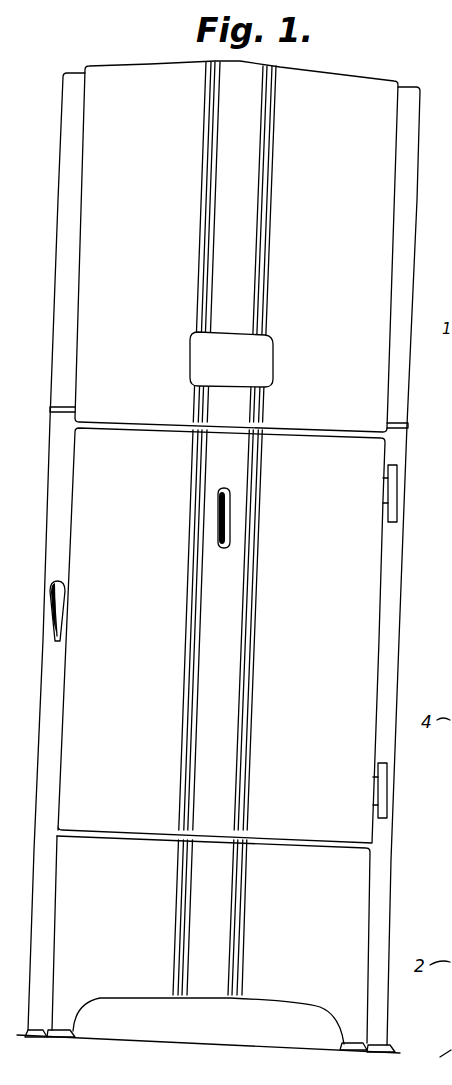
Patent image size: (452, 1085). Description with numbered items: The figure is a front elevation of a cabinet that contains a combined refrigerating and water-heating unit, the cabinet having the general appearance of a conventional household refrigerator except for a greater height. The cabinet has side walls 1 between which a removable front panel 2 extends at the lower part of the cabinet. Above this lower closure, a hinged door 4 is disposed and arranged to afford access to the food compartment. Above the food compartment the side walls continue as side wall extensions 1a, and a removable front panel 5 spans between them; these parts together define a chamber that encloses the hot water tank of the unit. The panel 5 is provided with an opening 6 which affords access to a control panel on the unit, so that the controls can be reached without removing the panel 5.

The side walls 1 is at (51, 537).
The side wall extensions 1a is at (68, 100).
The removable front panel 2 is at (155, 983).
The hinged door 4 is at (355, 618).
The removable front panel 5 is at (380, 178).
The opening 6 is at (189, 366).